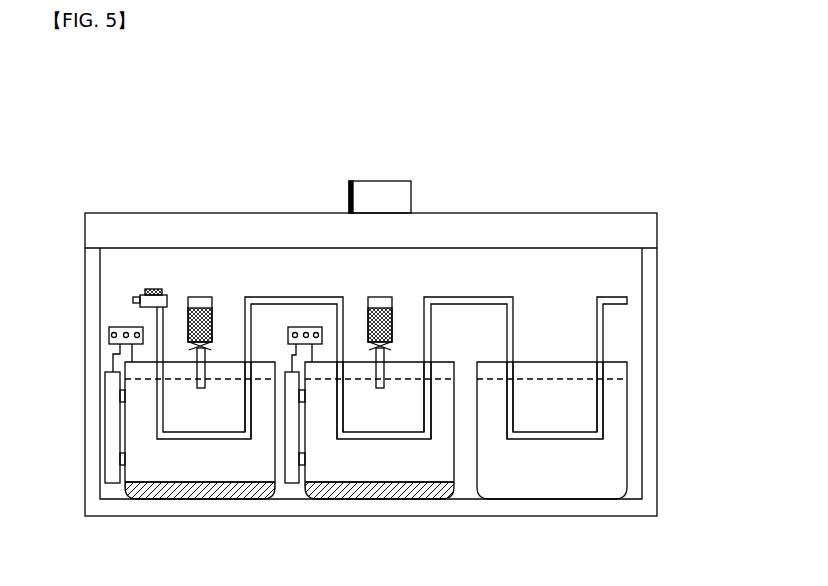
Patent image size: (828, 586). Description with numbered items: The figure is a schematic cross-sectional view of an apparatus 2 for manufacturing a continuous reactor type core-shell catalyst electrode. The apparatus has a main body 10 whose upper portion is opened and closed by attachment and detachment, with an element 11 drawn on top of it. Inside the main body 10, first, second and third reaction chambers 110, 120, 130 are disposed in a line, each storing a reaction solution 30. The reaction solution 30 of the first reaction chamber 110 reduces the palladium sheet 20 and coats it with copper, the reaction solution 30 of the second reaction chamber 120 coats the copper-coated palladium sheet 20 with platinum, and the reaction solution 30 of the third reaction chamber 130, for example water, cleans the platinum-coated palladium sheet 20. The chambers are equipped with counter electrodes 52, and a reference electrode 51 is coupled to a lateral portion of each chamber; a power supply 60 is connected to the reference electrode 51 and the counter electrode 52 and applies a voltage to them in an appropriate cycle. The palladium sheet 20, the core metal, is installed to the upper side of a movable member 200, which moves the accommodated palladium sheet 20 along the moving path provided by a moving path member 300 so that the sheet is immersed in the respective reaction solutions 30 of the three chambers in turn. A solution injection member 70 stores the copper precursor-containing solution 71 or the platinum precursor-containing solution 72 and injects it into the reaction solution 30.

The apparatus 2 is at (309, 138).
The main body 10 is at (657, 262).
The control box 11 is at (447, 213).
The palladium sheet 20 is at (150, 302).
The reaction solution 30 is at (138, 402).
The reference electrode 51 is at (112, 483).
The counter electrode 52 is at (168, 497).
The power supply 60 is at (125, 327).
The solution injection member 70 is at (203, 297).
The copper precursor-containing solution 71 is at (188, 313).
The platinum precursor-containing solution 72 is at (350, 312).
The first reaction chamber 110 is at (125, 440).
The second reaction chamber 120 is at (455, 460).
The third reaction chamber 130 is at (627, 465).
The movable member 200 is at (150, 296).
The moving path member 300 is at (278, 302).